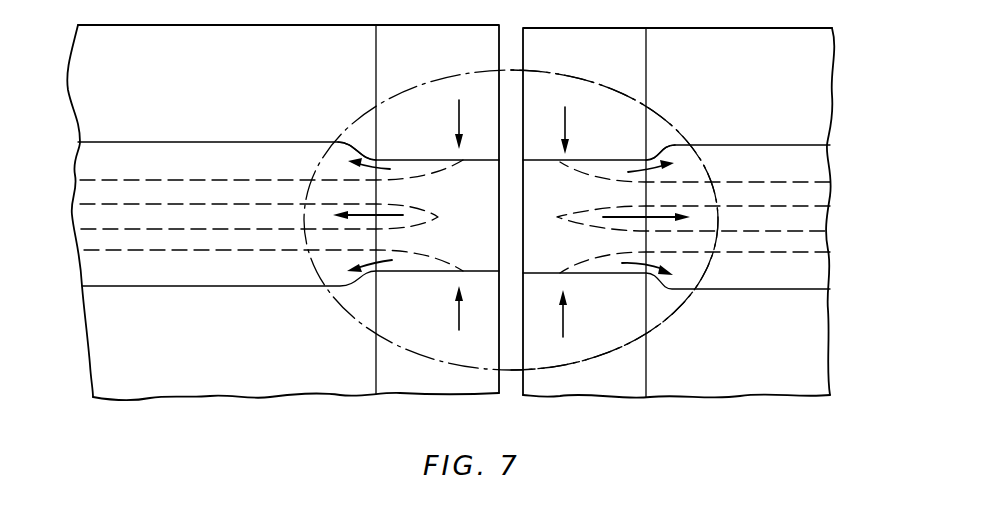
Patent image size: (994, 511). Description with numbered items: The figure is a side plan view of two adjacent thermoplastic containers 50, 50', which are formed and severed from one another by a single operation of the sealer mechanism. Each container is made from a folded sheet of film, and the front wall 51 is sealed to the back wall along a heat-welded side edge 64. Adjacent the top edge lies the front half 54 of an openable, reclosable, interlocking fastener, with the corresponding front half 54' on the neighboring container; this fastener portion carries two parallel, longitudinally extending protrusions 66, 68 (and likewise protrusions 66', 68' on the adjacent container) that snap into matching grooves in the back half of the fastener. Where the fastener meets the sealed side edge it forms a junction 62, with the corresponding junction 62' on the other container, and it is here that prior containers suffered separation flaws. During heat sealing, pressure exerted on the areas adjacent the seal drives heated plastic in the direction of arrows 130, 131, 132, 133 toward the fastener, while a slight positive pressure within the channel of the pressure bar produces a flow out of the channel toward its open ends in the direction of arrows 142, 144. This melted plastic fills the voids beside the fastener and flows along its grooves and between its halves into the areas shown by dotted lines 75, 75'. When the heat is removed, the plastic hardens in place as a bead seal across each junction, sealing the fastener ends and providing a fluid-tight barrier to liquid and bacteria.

The container 50 is at (283, 228).
The adjacent container 50' is at (678, 229).
The front wall 51 is at (95, 360).
The front half of fastener 54 is at (264, 153).
The front half of fastener of adjacent container 54' is at (694, 159).
The junction 62 is at (358, 181).
The junction of adjacent container 62' is at (667, 183).
The side edge 64 is at (423, 381).
The protrusion 66 is at (246, 194).
The protrusion of adjacent container fastener 66' is at (711, 196).
The protrusion 68 is at (246, 252).
The protrusion of adjacent container fastener 68' is at (712, 257).
The bead seal 75 is at (511, 220).
The bead seal of adjacent container 75' is at (614, 220).
The plastic flow arrow 130 is at (455, 328).
The plastic flow arrow 131 is at (455, 125).
The plastic flow arrow 132 is at (568, 121).
The plastic flow arrow 133 is at (566, 330).
The plastic flow arrow 142 is at (388, 214).
The plastic flow arrow 144 is at (631, 215).